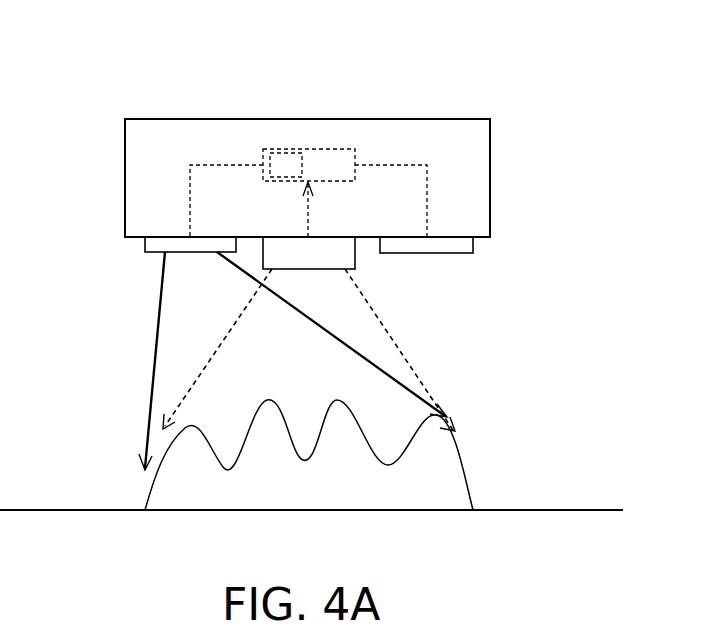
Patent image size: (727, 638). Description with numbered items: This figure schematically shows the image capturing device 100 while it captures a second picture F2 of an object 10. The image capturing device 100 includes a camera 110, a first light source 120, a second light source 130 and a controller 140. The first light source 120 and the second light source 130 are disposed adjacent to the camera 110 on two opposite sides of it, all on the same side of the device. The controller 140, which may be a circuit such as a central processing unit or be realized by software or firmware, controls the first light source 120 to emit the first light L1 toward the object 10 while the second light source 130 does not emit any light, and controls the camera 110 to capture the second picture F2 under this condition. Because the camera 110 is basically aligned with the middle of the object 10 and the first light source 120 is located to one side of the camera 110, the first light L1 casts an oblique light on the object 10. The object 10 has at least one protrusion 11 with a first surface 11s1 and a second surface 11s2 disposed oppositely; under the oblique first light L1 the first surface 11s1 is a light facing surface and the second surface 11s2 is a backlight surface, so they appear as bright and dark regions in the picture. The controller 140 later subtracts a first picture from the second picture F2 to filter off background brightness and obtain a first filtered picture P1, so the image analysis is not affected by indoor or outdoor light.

The image capturing device 100 is at (181, 43).
The controller 140 is at (310, 148).
The first filtered picture P1 is at (286, 166).
The second picture F2 is at (322, 209).
The first light source 120 is at (188, 256).
The camera 110 is at (328, 270).
The second light source 130 is at (427, 256).
The first light L1 is at (155, 339).
The protrusion 11 is at (178, 412).
The first surface 11s1 is at (165, 450).
The second surface 11s2 is at (283, 427).
The object 10 is at (302, 493).